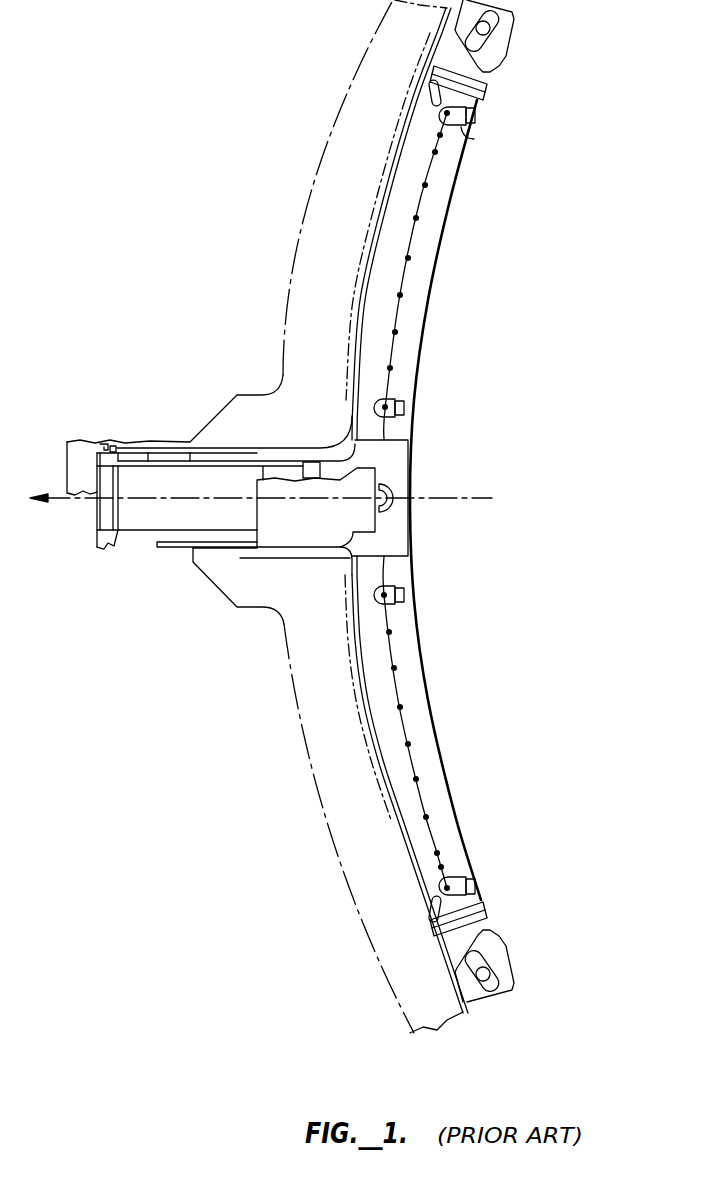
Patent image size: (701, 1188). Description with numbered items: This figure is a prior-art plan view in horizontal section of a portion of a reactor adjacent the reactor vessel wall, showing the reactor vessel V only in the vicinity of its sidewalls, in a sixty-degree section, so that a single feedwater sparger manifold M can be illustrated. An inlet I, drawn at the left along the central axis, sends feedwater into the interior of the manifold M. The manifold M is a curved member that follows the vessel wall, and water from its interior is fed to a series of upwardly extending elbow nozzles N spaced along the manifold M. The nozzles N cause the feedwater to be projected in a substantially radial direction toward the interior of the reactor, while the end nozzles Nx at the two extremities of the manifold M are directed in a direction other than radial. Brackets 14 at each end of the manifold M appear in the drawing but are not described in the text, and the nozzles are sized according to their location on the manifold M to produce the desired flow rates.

The mounting bracket 14 is at (506, 48).
The elbow nozzles N is at (404, 421).
The end nozzles Nx is at (470, 131).
The sparger manifold M is at (405, 729).
The reactor vessel V is at (320, 691).
The inlet I is at (90, 526).